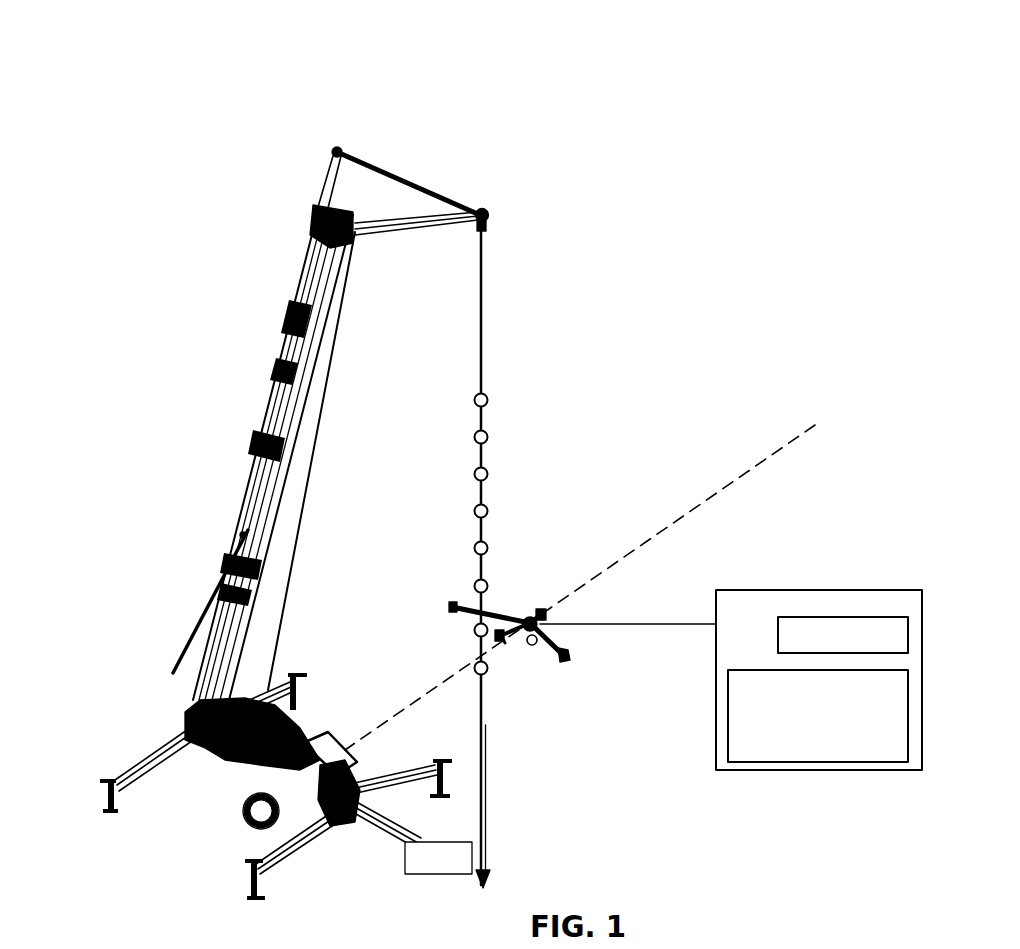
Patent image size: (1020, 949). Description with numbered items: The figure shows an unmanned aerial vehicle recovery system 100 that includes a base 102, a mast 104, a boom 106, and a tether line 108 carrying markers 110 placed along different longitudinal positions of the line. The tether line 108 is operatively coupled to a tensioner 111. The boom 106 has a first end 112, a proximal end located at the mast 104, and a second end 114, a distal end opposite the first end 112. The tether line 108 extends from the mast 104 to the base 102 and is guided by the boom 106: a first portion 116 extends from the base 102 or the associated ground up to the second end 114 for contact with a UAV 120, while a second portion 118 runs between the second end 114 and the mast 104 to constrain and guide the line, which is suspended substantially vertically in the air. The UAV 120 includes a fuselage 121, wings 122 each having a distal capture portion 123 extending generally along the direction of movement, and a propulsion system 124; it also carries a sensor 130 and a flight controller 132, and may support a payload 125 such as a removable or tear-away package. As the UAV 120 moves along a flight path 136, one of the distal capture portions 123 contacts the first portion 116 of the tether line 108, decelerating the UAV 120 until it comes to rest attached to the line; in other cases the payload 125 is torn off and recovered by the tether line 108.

The UAV recovery system 100 is at (464, 464).
The base 102 is at (239, 775).
The mast 104 is at (258, 437).
The boom 106 is at (373, 233).
The tether line 108 is at (482, 342).
The markers 110 is at (481, 476).
The tensioner 111 is at (438, 858).
The first end 112 is at (338, 218).
The second end 114 is at (490, 223).
The first portion 116 is at (482, 375).
The second portion 118 is at (378, 172).
The UAV 120 is at (536, 642).
The fuselage 121 is at (532, 643).
The wings 122 is at (485, 617).
The distal capture portion 123 is at (452, 605).
The propulsion system 124 is at (500, 640).
The payload 125 is at (535, 641).
The sensor 130 is at (790, 613).
The flight controller 132 is at (770, 762).
The flight path 136 is at (707, 498).